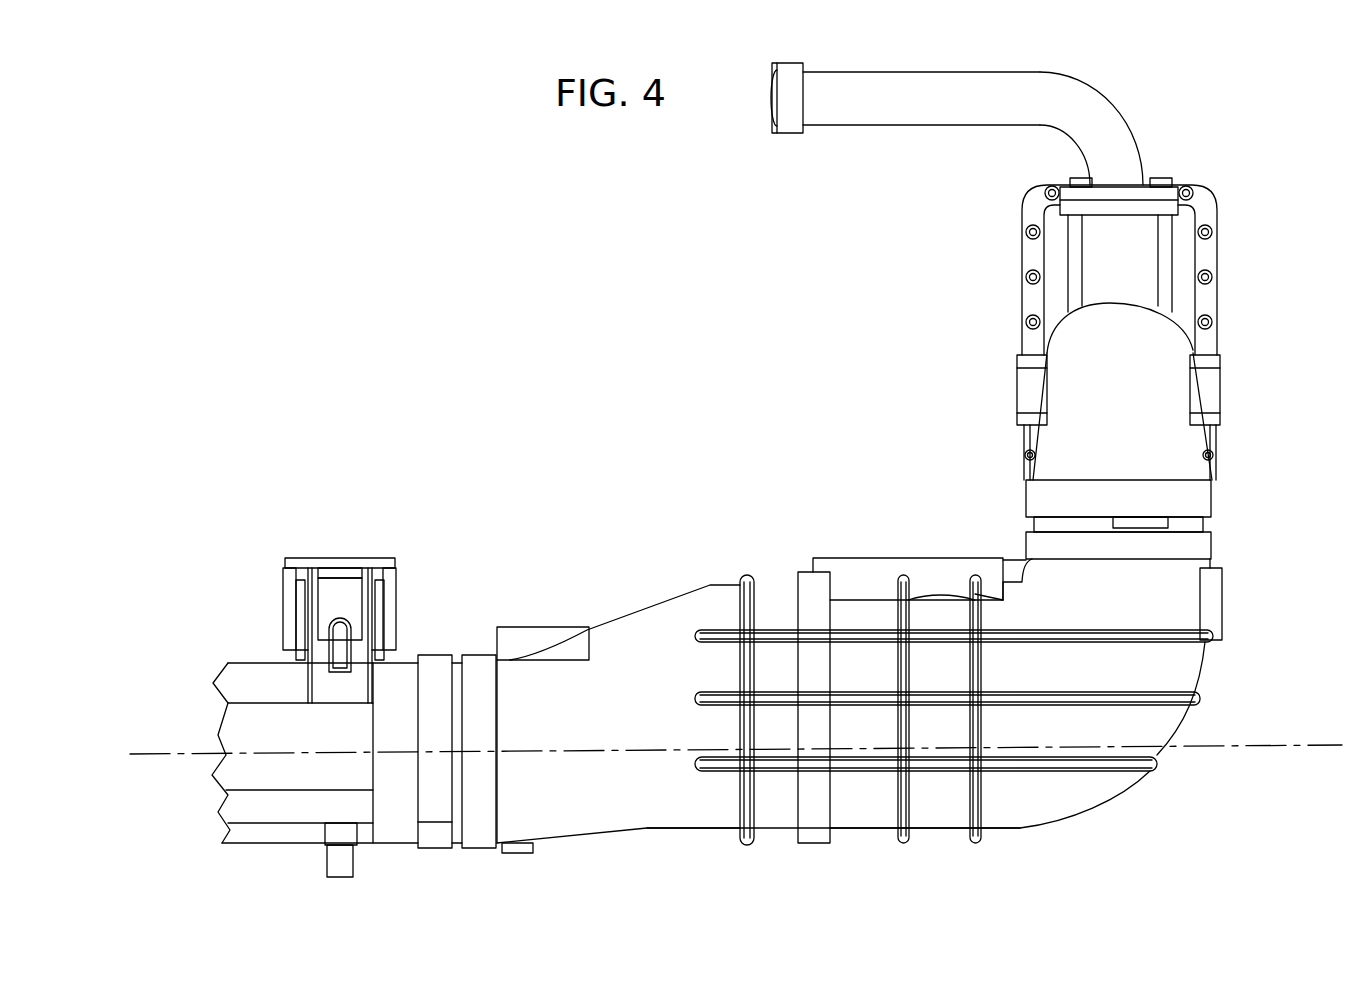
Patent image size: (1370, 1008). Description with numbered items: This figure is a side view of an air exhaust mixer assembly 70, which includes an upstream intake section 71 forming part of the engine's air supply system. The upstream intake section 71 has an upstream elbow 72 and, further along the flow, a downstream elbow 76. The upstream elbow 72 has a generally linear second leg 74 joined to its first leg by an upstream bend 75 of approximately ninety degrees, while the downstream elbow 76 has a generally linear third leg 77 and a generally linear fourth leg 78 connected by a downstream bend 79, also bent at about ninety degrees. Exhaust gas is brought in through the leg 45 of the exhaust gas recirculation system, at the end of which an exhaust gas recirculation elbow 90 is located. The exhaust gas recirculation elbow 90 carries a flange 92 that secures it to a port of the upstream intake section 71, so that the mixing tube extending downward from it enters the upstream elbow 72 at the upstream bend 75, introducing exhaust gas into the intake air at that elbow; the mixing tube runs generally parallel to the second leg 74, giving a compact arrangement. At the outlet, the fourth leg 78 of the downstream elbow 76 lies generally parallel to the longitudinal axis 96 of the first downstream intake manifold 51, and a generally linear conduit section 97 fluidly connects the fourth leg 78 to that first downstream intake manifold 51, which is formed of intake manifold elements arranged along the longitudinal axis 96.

The leg 45 is at (887, 94).
The exhaust gas recirculation elbow 90 is at (1088, 107).
The air exhaust mixer assembly 70 is at (1172, 105).
The flange 92 is at (1148, 197).
The upstream bend 75 is at (1125, 345).
The second leg 74 is at (1143, 425).
The upstream elbow 72 is at (1180, 447).
The upstream intake section 71 is at (988, 373).
The third leg 77 is at (1168, 610).
The downstream elbow 76 is at (1162, 665).
The longitudinal axis 96 is at (1255, 745).
The downstream bend 79 is at (1145, 752).
The fourth leg 78 is at (940, 810).
The conduit section 97 is at (583, 810).
The first downstream intake manifold 51 is at (270, 853).